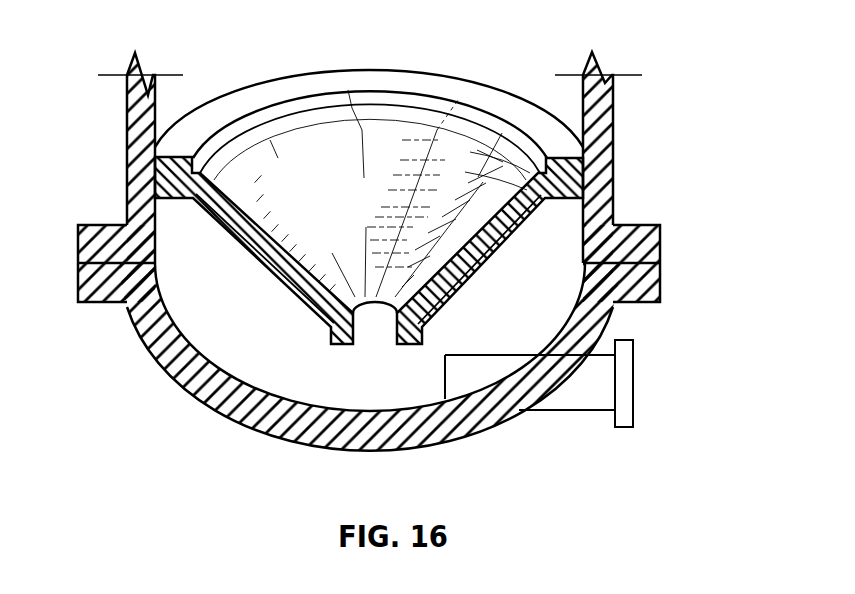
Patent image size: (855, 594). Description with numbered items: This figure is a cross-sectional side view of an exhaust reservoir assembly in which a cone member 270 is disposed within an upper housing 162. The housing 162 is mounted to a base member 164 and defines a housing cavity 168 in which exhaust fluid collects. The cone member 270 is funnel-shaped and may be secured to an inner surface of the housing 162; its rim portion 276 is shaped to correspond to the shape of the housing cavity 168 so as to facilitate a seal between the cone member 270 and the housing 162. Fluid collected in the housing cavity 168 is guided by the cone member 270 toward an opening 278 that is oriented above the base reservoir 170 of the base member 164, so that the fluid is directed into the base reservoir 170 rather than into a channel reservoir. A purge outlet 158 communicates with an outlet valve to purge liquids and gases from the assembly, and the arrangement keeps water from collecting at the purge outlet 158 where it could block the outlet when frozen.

The purge outlet 158 is at (634, 418).
The housing 162 is at (630, 163).
The base member 164 is at (490, 438).
The housing cavity 168 is at (622, 97).
The base reservoir 170 is at (200, 333).
The cone member 270 is at (241, 86).
The rim portion 276 is at (214, 108).
The opening 278 is at (331, 330).